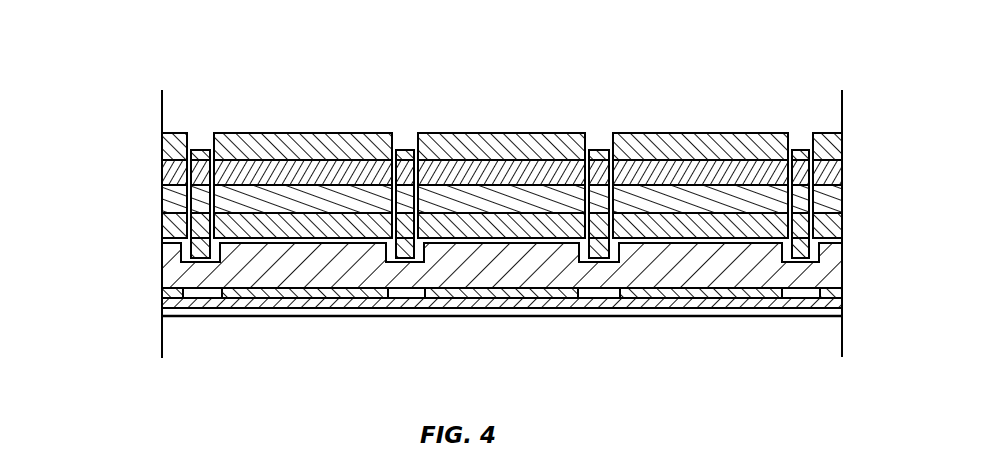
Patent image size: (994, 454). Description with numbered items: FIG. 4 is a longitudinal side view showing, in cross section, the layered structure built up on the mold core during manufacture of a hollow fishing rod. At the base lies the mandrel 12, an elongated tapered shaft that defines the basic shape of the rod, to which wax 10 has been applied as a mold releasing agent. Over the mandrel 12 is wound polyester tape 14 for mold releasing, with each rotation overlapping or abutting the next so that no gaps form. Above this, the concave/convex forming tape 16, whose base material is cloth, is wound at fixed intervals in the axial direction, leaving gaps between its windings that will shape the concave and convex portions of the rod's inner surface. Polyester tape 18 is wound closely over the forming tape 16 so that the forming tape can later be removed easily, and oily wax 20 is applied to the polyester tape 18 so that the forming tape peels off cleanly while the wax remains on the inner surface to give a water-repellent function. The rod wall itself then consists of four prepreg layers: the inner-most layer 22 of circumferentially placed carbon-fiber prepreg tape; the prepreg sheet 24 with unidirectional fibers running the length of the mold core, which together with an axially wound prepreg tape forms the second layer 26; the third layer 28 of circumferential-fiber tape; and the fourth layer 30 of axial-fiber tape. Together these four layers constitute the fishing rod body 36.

The wax 10 is at (655, 312).
The mandrel 12 is at (820, 347).
The polyester tape 14 is at (723, 302).
The concave/convex forming tape 16 is at (303, 293).
The polyester tape 18 is at (168, 272).
The oily wax 20 is at (862, 226).
The inner-most layer 22 is at (150, 237).
The prepreg sheet 24 is at (437, 146).
The second layer 26 is at (168, 205).
The third layer 28 is at (165, 170).
The fourth layer 30 is at (165, 142).
The fishing rod body 36 is at (660, 72).